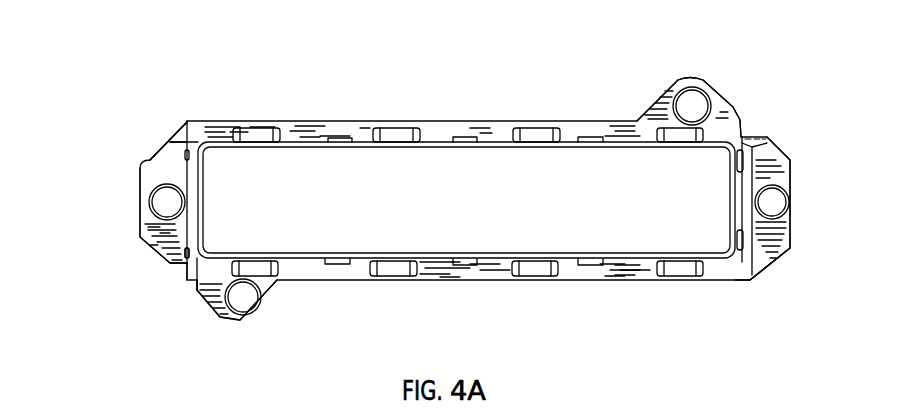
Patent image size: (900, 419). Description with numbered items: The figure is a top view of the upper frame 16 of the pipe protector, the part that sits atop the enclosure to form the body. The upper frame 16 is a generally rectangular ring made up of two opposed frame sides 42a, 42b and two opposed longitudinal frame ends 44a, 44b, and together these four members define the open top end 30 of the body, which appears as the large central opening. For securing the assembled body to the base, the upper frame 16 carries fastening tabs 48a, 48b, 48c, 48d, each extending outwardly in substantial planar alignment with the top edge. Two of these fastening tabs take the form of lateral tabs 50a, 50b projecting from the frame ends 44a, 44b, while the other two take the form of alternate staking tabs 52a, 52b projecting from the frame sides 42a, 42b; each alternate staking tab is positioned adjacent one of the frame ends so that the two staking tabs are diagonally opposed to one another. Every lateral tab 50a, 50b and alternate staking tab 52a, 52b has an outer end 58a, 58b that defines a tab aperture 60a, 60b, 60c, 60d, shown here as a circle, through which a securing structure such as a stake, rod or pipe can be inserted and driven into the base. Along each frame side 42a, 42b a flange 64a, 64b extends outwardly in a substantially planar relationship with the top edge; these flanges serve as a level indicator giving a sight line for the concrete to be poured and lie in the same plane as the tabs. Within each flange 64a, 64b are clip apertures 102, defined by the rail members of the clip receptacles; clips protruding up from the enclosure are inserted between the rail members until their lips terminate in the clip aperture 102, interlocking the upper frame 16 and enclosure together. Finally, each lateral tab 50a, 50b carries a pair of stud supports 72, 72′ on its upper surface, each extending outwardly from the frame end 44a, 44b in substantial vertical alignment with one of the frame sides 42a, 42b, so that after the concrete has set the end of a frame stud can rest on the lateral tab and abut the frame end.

The upper frame 16 is at (762, 121).
The open top end 30 is at (260, 167).
The frame side 42a is at (632, 263).
The frame side 42b is at (502, 143).
The frame end 44a is at (770, 162).
The frame end 44b is at (193, 230).
The fastening tab 48a is at (778, 253).
The fastening tab 48b is at (165, 158).
The fastening tab 48c is at (722, 90).
The fastening tab 48d is at (293, 280).
The lateral tab 50a is at (772, 180).
The lateral tab 50b is at (155, 170).
The alternate staking tab 52a is at (212, 300).
The alternate staking tab 52b is at (650, 107).
The outer end 58a is at (792, 200).
The outer end 58b is at (140, 238).
The tab aperture 60a is at (778, 210).
The tab aperture 60b is at (167, 207).
The tab aperture 60c is at (688, 100).
The tab aperture 60d is at (243, 298).
The flange 64a is at (442, 272).
The flange 64b is at (435, 128).
The stud support 72 is at (185, 272).
The stud support 72′ is at (190, 122).
The clip aperture 102 is at (528, 272).